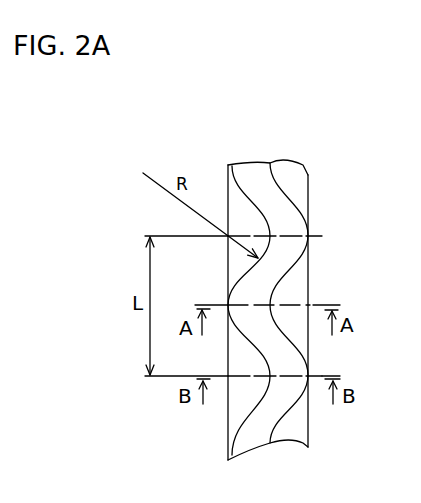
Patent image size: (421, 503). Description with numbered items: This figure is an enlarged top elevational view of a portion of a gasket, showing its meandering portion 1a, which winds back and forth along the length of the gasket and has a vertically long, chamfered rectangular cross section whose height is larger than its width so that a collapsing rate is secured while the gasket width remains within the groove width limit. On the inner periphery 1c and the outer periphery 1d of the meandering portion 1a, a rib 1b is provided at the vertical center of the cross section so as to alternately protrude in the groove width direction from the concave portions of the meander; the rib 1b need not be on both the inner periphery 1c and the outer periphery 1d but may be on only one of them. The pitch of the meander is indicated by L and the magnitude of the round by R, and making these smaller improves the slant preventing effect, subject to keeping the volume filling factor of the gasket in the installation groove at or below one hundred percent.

The meandering portion 1a is at (283, 214).
The rib 1b is at (298, 290).
The inner periphery 1c is at (306, 350).
The outer periphery 1d is at (227, 453).